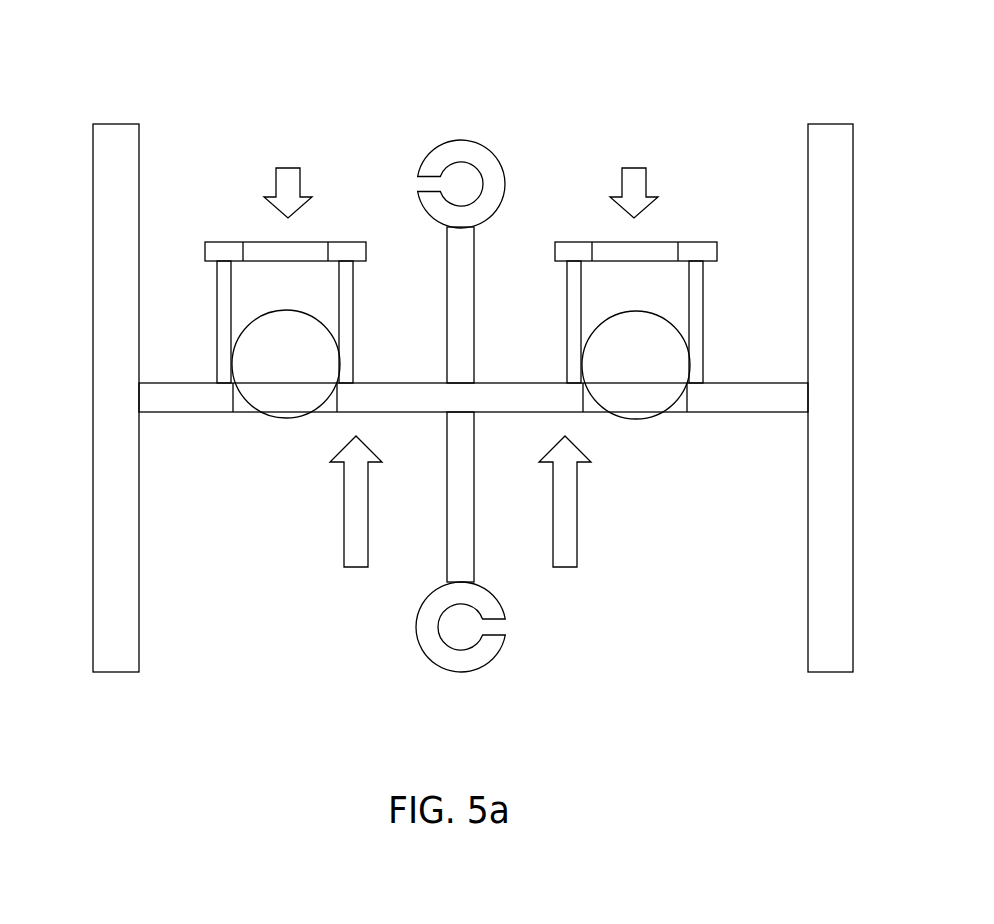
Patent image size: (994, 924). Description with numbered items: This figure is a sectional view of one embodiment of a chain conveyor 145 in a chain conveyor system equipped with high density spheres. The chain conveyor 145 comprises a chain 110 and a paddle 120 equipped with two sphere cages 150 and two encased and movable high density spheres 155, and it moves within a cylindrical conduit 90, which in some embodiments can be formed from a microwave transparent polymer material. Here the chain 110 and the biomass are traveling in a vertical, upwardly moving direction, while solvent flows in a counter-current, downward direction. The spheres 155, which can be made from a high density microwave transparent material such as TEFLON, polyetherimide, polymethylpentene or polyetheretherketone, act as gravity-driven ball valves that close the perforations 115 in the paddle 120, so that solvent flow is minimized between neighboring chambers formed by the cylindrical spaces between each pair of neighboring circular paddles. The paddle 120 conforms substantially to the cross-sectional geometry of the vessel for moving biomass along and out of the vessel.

The chain conveyor 145 is at (137, 73).
The conduit 90 is at (93, 398).
The paddle 120 is at (506, 412).
The chain 110 is at (474, 357).
The perforations 115 is at (248, 242).
The sphere cage 150 is at (354, 353).
The high density sphere 155 is at (283, 420).